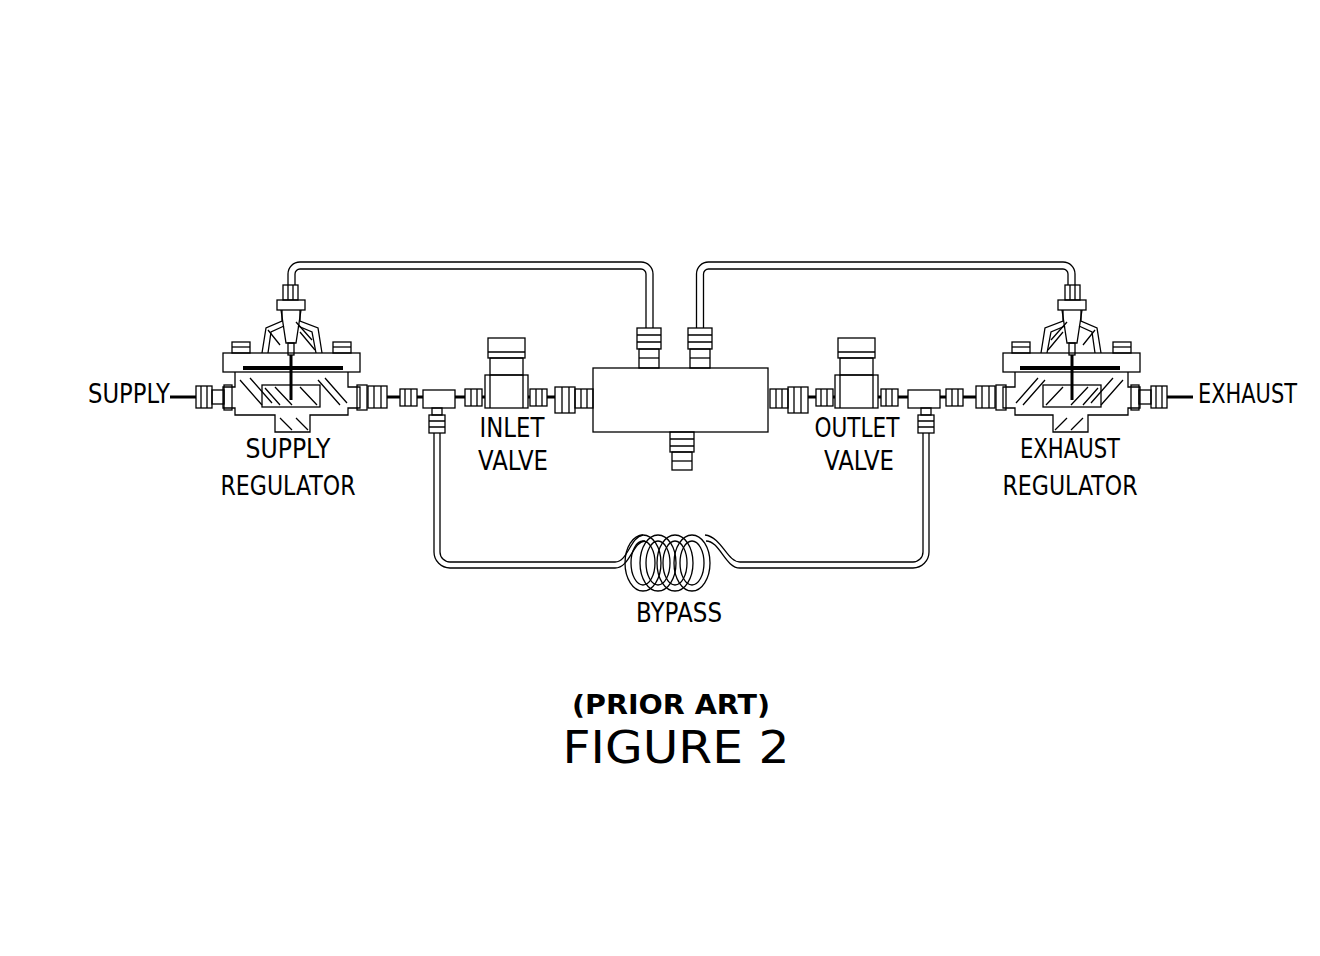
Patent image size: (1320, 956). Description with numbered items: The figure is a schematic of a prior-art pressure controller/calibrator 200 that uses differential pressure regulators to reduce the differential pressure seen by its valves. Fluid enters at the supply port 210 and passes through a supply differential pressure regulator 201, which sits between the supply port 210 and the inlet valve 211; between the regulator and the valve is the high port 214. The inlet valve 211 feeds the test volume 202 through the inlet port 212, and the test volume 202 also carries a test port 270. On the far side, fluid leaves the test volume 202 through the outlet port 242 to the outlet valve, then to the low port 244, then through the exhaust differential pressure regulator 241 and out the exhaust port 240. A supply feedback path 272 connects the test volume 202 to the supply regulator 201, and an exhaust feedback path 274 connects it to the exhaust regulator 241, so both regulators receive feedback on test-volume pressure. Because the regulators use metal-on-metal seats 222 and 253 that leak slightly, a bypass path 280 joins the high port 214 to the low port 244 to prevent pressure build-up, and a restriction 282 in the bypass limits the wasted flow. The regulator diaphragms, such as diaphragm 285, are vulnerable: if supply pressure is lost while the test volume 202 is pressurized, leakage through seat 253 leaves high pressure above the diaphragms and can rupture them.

The pressure controller/calibrator 200 is at (1249, 111).
The supply differential pressure regulator 201 is at (292, 349).
The test volume 202 is at (694, 361).
The supply port 210 is at (193, 431).
The inlet valve 211 is at (491, 343).
The inlet port 212 is at (560, 366).
The high port 214 is at (421, 376).
The seat 222 is at (237, 451).
The exhaust port 240 is at (1162, 357).
The exhaust differential pressure regulator 241 is at (982, 326).
The outlet port 242 is at (802, 354).
The low port 244 is at (942, 373).
The seat 253 is at (1097, 372).
The test port 270 is at (656, 479).
The supply feedback path 272 is at (474, 278).
The exhaust feedback path 274 is at (881, 278).
The bypass path 280 is at (605, 436).
The restriction 282 is at (688, 530).
The diaphragm 285 is at (1163, 304).